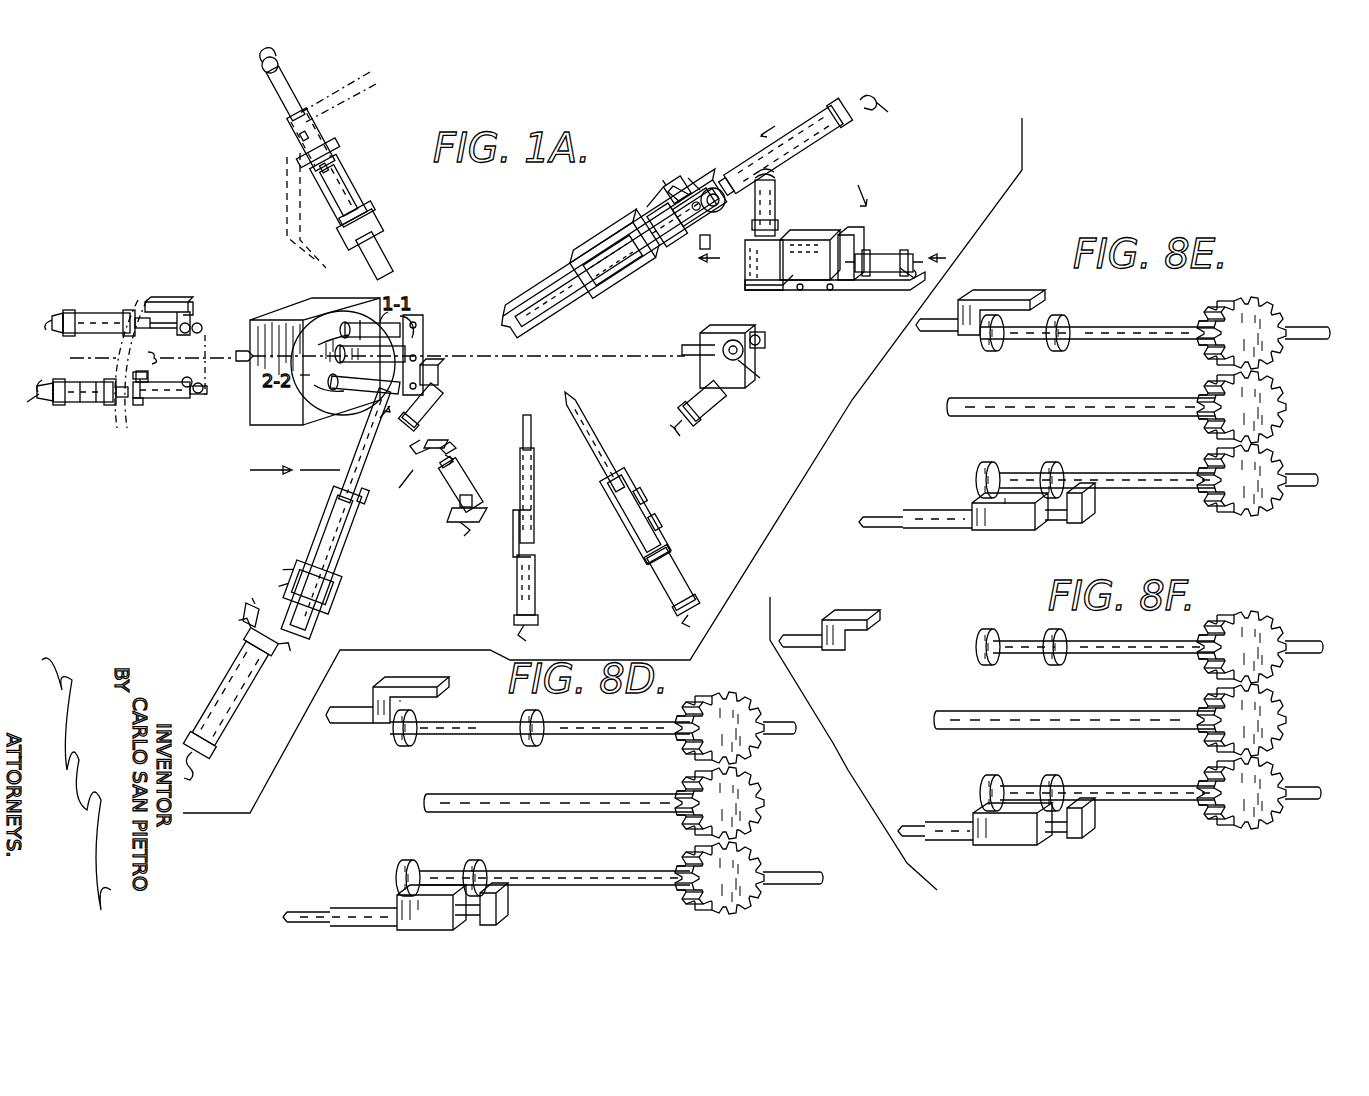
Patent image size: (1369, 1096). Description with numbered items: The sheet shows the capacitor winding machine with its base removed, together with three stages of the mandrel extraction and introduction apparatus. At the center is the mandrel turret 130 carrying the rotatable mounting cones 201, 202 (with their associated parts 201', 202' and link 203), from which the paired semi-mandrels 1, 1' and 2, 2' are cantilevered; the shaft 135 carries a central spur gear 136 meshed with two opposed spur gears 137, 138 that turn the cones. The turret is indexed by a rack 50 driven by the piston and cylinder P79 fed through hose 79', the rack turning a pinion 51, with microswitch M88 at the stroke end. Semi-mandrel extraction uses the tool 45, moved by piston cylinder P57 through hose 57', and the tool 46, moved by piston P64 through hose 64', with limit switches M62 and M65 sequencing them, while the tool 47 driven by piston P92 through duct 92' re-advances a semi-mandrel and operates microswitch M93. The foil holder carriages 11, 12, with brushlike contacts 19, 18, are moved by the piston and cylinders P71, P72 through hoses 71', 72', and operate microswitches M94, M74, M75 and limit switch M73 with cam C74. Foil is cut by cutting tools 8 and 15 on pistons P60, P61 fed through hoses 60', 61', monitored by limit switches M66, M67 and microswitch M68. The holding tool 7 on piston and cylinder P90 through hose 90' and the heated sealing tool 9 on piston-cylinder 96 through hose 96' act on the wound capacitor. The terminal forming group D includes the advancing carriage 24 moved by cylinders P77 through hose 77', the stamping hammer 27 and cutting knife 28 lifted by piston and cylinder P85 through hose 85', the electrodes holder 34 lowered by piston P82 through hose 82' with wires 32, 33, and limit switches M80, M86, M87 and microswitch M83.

In FIG. 1A, the pneumatic piston and cylinder P60 is at (292, 104).
In FIG. 1A, the hose 60' is at (241, 69).
In FIG. 1A, the microswitch M68 is at (298, 143).
In FIG. 1A, the limit switch M66 is at (320, 173).
In FIG. 1A, the cutting tool 8 is at (374, 214).
In FIG. 1A, the mandrel turret 130 is at (320, 310).
In FIG. 1A, the mounting cone 201 is at (359, 302).
In FIG. 1A, the shaft end 201' is at (428, 299).
In FIG. 1A, the link plate 203 is at (421, 320).
In FIG. 1A, the shaft 202' is at (406, 347).
In FIG. 1A, the mounting cone 202 is at (349, 413).
In FIG. 1A, the piston P92 is at (127, 318).
In FIG. 1A, the duct 92' is at (32, 312).
In FIG. 1A, the microswitch M93 is at (191, 308).
In FIG. 1A, the limit stop switch M65 is at (134, 370).
In FIG. 1A, the hose 64' is at (22, 368).
In FIG. 1A, the piston P64 is at (103, 415).
In FIG. 1A, the hose 57' is at (24, 418).
In FIG. 1A, the piston cylinder P57 is at (87, 405).
In FIG. 1A, the limit stop switch M62 is at (142, 408).
In FIG. 1A, the tool 45 is at (180, 403).
In FIG. 8D, the tool 45 is at (462, 920).
In FIG. 8E, the tool 45 is at (1017, 528).
In FIG. 8F, the tool 45 is at (1026, 846).
In FIG. 1A, the tool 46 is at (205, 396).
In FIG. 8D, the tool 46 is at (517, 904).
In FIG. 8E, the tool 46 is at (1087, 520).
In FIG. 8F, the tool 46 is at (1101, 812).
In FIG. 1A, the foil holder carriage 12 is at (538, 290).
In FIG. 1A, the sliding brushlike contact 18 is at (587, 248).
In FIG. 1A, the limit switch M73 is at (680, 255).
In FIG. 1A, the microswitch M75 is at (690, 200).
In FIG. 1A, the cam C74 is at (721, 249).
In FIG. 1A, the pneumatic piston and cylinder P72 is at (830, 130).
In FIG. 1A, the hose 72' is at (900, 114).
In FIG. 1A, the hose 85' is at (793, 161).
In FIG. 1A, the pneumatic piston and cylinder P85 is at (777, 189).
In FIG. 1A, the limit stop switch M86 is at (770, 214).
In FIG. 1A, the advancing carriage 24 is at (812, 232).
In FIG. 1A, the cutting knife 28 is at (750, 283).
In FIG. 1A, the stamping hammer 27 is at (770, 283).
In FIG. 1A, the limit stop switch M80 is at (795, 288).
In FIG. 1A, the limit stop switch M87 is at (865, 298).
In FIG. 1A, the pneumatic cylinders P77 is at (890, 252).
In FIG. 1A, the compressed air hose 77' is at (913, 286).
In FIG. 1A, the terminal forming group D is at (895, 188).
In FIG. 1A, the pinion 51 is at (724, 332).
In FIG. 1A, the rack 50 is at (753, 362).
In FIG. 1A, the microswitch M88 is at (769, 340).
In FIG. 1A, the piston and cylinder P79 is at (715, 395).
In FIG. 1A, the hose 79' is at (702, 435).
In FIG. 1A, the holding tool 7 is at (438, 371).
In FIG. 1A, the pneumatic piston and cylinder P90 is at (436, 398).
In FIG. 1A, the wire 32 is at (440, 436).
In FIG. 1A, the wire 33 is at (448, 439).
In FIG. 1A, the electrodes holder 34 is at (460, 442).
In FIG. 1A, the microswitch M83 is at (464, 483).
In FIG. 1A, the hose 90' is at (404, 464).
In FIG. 1A, the piston P82 is at (442, 490).
In FIG. 1A, the hose 82' is at (465, 545).
In FIG. 1A, the sealing tool 9 is at (530, 432).
In FIG. 1A, the piston-cylinder 96 is at (545, 590).
In FIG. 1A, the hose 96' is at (550, 631).
In FIG. 1A, the cutting tool 15 is at (584, 410).
In FIG. 1A, the limit switch M67 is at (610, 504).
In FIG. 1A, the piston P61 is at (674, 556).
In FIG. 1A, the hose 61' is at (664, 617).
In FIG. 1A, the foil holder carriage 11 is at (346, 460).
In FIG. 1A, the sliding brushlike contact 19 is at (292, 518).
In FIG. 1A, the microswitch M94 is at (270, 568).
In FIG. 1A, the microswitch M74 is at (240, 612).
In FIG. 1A, the piston and cylinder P71 is at (256, 688).
In FIG. 1A, the hose 71' is at (213, 771).
In FIG. 8D, the tool 47 is at (428, 680).
In FIG. 8E, the tool 47 is at (1004, 300).
In FIG. 8F, the tool 47 is at (882, 622).
In FIG. 8D, the semi-mandrel 1 is at (540, 719).
In FIG. 8E, the semi-mandrel 1 is at (1097, 343).
In FIG. 8F, the semi-mandrel 1 is at (1095, 640).
In FIG. 8D, the semi-mandrel 1' is at (710, 726).
In FIG. 8E, the semi-mandrel 1' is at (1218, 351).
In FIG. 8F, the semi-mandrel 1' is at (1215, 648).
In FIG. 8D, the semi-mandrel 2 is at (543, 867).
In FIG. 8E, the semi-mandrel 2 is at (1095, 468).
In FIG. 8F, the semi-mandrel 2 is at (1097, 782).
In FIG. 8D, the semi-mandrel 2' is at (707, 876).
In FIG. 8E, the semi-mandrel 2' is at (1221, 462).
In FIG. 8F, the semi-mandrel 2' is at (1223, 790).
In FIG. 8E, the shaft 135 is at (1081, 400).
In FIG. 8E, the central spur gear 136 is at (1271, 408).
In FIG. 8E, the spur gear 137 is at (1269, 508).
In FIG. 8E, the spur gear 138 is at (1267, 310).